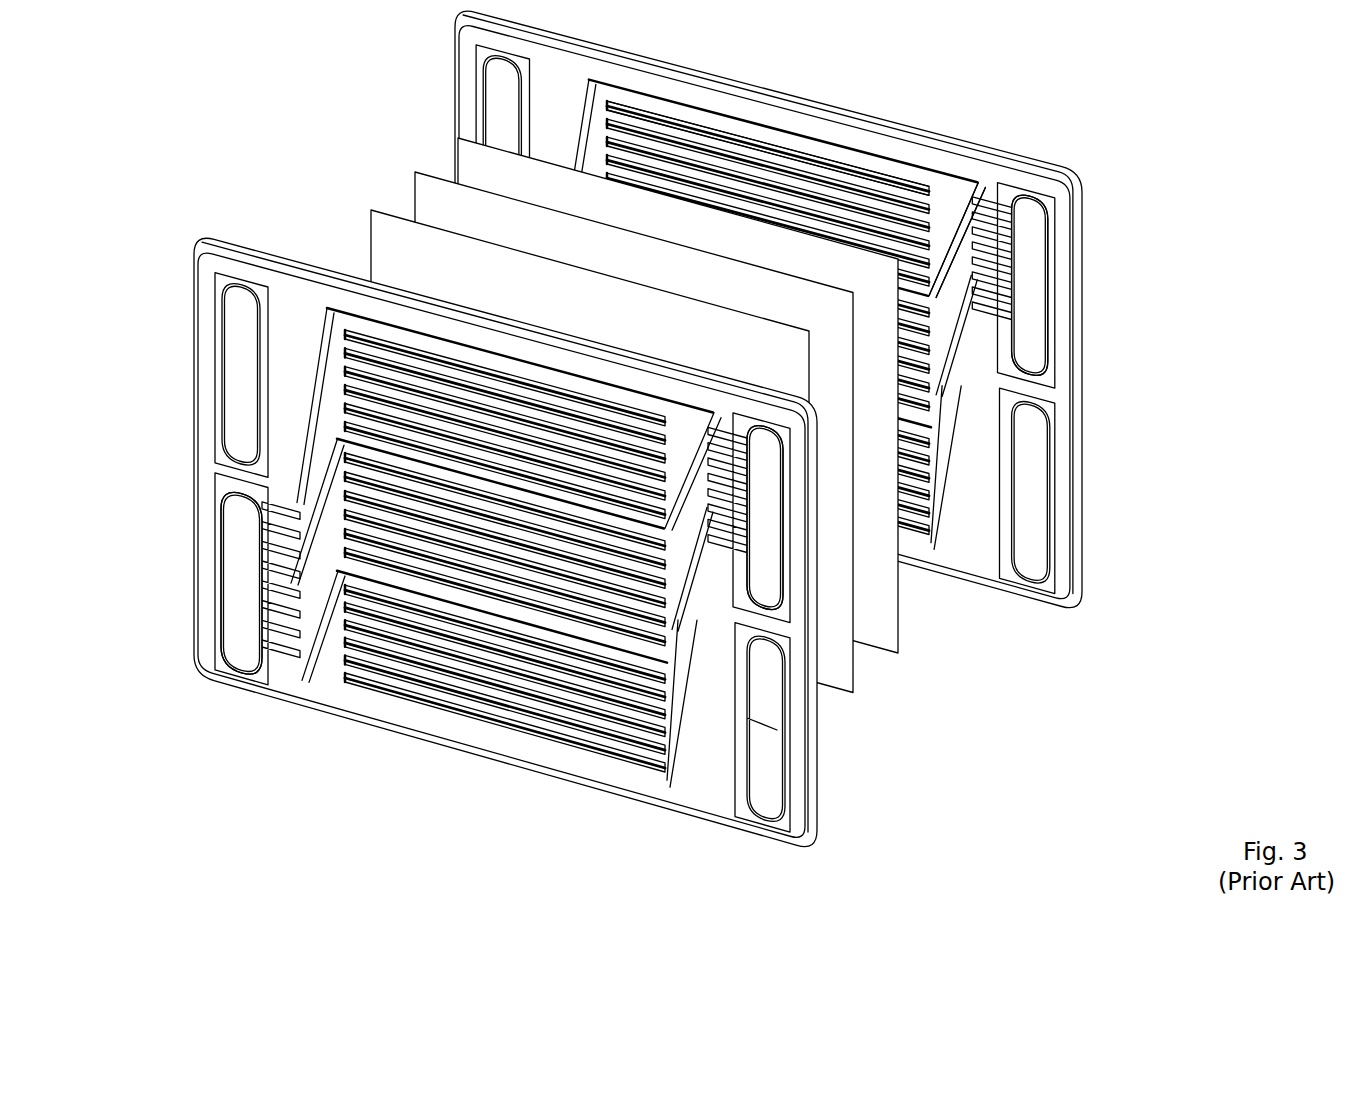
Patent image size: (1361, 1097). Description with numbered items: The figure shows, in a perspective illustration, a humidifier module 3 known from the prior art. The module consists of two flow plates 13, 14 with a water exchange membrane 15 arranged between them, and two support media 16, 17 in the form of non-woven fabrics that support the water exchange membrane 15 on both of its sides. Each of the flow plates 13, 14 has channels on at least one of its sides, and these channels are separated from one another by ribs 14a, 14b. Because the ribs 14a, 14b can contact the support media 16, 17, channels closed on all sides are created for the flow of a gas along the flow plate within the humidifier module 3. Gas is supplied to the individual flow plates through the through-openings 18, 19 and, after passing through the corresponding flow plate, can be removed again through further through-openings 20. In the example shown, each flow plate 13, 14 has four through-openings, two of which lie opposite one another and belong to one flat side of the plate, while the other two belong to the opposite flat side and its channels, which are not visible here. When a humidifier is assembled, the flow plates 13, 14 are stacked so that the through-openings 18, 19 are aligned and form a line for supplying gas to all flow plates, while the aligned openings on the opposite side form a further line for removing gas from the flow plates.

The humidifier module 3 is at (1117, 700).
The flow plate 13 is at (812, 820).
The flow plate 14 is at (1065, 395).
The rib 14a is at (923, 203).
The rib 14b is at (970, 185).
The water exchange membrane 15 is at (838, 600).
The support medium 16 is at (395, 250).
The support medium 17 is at (480, 165).
The through-opening 18 is at (1025, 290).
The through-opening 19 is at (770, 555).
The through-opening 20 is at (243, 570).